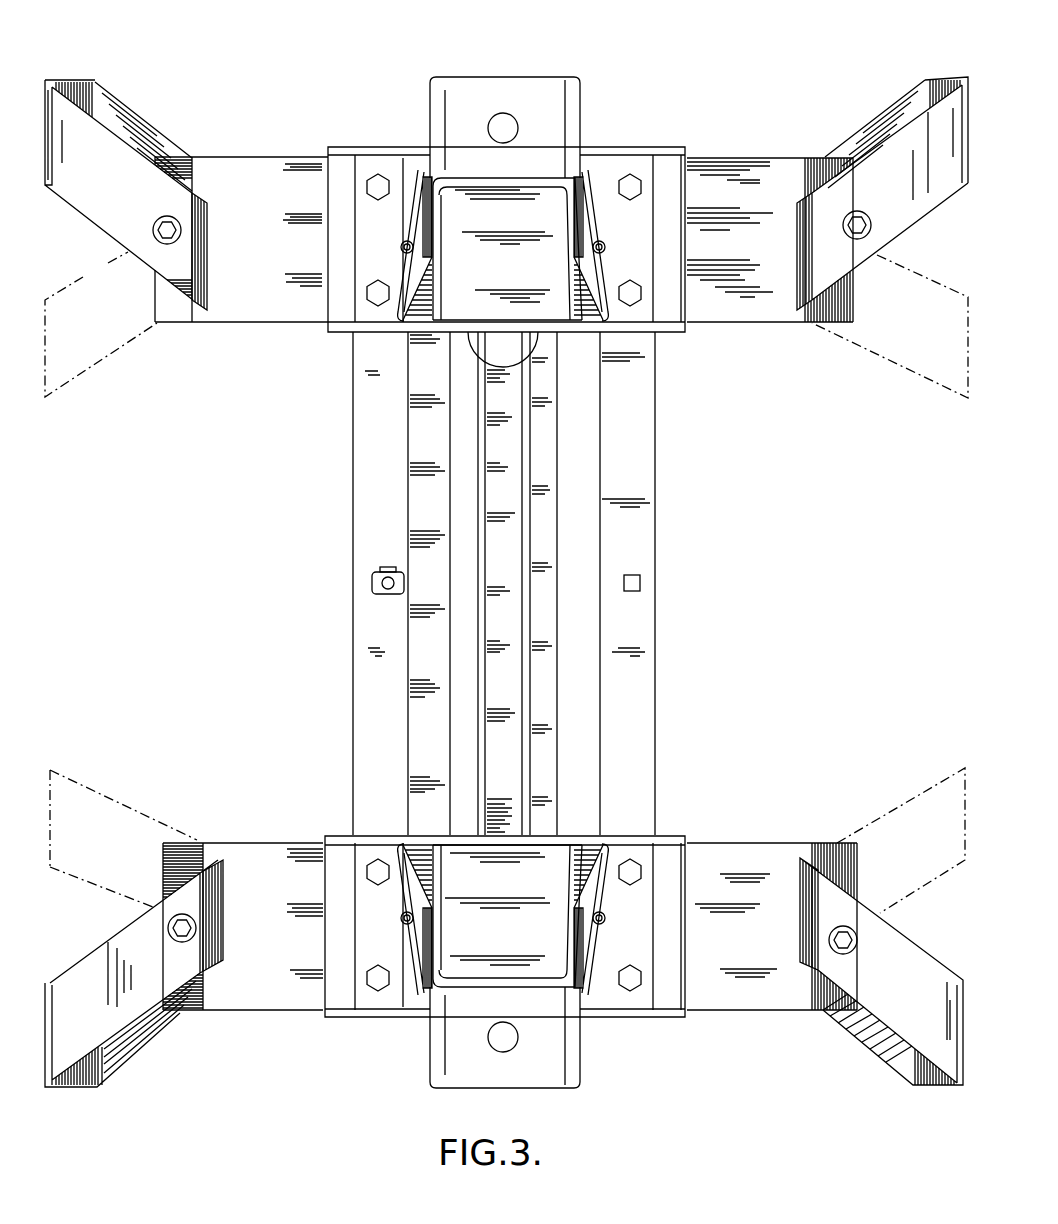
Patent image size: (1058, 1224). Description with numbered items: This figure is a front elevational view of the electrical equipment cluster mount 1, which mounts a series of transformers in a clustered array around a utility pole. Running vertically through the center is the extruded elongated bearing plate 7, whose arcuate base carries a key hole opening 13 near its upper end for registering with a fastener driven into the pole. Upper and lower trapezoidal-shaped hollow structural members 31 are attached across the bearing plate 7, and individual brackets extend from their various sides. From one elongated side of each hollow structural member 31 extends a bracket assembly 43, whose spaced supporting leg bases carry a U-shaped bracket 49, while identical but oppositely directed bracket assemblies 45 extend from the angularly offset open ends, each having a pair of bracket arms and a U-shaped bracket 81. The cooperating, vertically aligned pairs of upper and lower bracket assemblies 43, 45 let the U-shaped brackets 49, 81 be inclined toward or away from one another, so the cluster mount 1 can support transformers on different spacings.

The electrical equipment cluster mount 1 is at (204, 515).
The elongated bearing plate 7 is at (659, 513).
The key hole opening 13 is at (525, 342).
The hollow structural member 31 is at (604, 146).
The bracket assembly 43 is at (521, 71).
The bracket assembly 45 is at (157, 128).
The U-shaped bracket 49 is at (548, 99).
The U-shaped bracket 81 is at (69, 140).